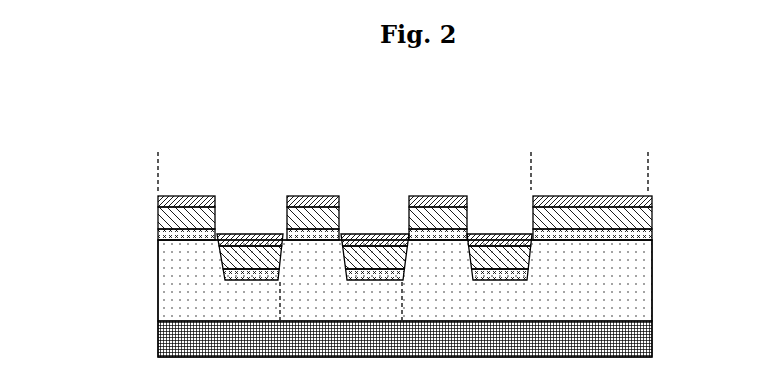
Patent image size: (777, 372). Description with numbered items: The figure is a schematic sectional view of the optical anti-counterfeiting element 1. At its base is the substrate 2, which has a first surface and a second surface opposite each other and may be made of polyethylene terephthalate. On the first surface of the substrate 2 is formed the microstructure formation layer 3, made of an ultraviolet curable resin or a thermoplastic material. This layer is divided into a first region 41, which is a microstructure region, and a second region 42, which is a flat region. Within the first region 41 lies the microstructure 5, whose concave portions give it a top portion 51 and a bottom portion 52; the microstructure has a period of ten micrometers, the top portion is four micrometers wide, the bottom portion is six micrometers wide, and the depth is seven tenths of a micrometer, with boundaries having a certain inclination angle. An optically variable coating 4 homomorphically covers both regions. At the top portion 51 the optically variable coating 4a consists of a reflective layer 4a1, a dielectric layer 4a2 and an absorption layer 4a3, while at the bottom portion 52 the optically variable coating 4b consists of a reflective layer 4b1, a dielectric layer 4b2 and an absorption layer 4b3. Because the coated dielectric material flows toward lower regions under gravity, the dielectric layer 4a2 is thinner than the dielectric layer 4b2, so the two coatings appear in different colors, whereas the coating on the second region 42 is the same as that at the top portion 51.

The optical anti-counterfeiting element 1 is at (680, 245).
The substrate 2 is at (640, 330).
The microstructure formation layer 3 is at (640, 293).
The optically variable coating 4 is at (662, 215).
The optically variable coating at the top portion 4a is at (126, 216).
The reflective layer 4a1 is at (150, 234).
The dielectric layer 4a2 is at (150, 217).
The absorption layer 4a3 is at (150, 203).
The optically variable coating at the bottom portion 4b is at (172, 267).
The reflective layer 4b1 is at (233, 271).
The dielectric layer 4b2 is at (233, 253).
The absorption layer 4b3 is at (233, 240).
The first region 41 is at (530, 150).
The second region 42 is at (648, 150).
The microstructure 5 is at (392, 309).
The top portion 51 is at (313, 229).
The bottom portion 52 is at (375, 268).